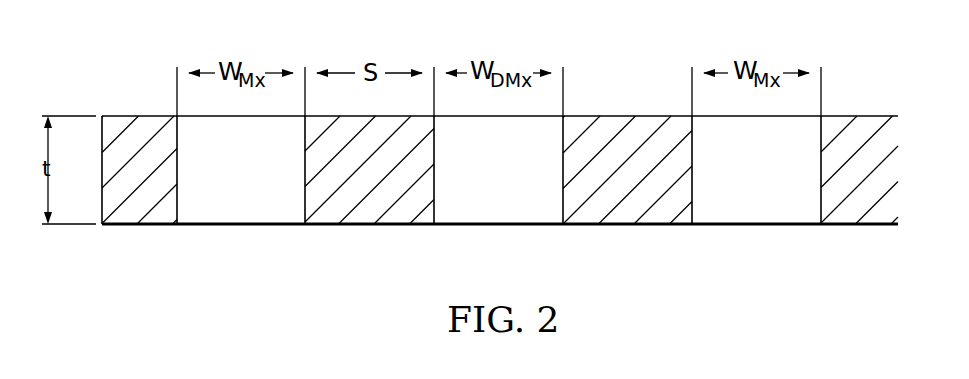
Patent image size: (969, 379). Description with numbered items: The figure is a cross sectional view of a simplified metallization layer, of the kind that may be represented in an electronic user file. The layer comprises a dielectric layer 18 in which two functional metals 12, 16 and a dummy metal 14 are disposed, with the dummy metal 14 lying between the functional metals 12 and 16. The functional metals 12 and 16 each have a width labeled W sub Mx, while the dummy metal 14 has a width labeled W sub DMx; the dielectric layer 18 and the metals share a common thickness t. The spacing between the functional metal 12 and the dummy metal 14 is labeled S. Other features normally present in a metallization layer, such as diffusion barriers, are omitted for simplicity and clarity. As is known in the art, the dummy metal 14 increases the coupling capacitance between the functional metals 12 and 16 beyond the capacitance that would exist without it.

The functional metal 12 is at (241, 214).
The dummy metal 14 is at (488, 214).
The functional metal 16 is at (757, 214).
The dielectric layer 18 is at (145, 113).